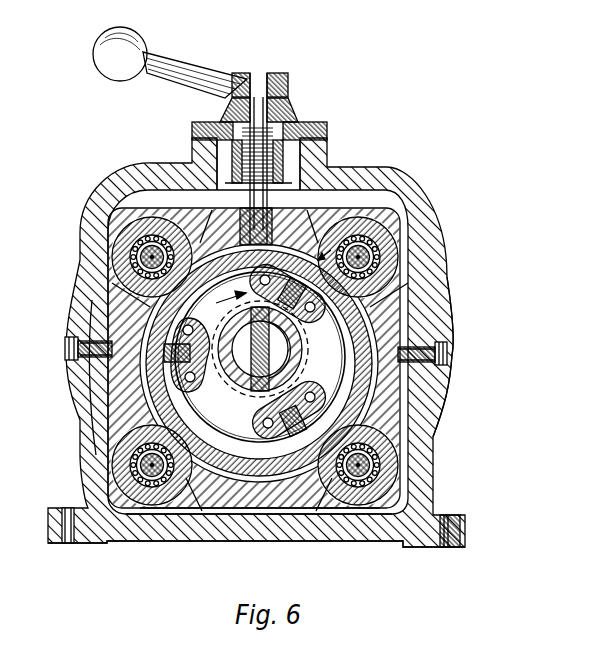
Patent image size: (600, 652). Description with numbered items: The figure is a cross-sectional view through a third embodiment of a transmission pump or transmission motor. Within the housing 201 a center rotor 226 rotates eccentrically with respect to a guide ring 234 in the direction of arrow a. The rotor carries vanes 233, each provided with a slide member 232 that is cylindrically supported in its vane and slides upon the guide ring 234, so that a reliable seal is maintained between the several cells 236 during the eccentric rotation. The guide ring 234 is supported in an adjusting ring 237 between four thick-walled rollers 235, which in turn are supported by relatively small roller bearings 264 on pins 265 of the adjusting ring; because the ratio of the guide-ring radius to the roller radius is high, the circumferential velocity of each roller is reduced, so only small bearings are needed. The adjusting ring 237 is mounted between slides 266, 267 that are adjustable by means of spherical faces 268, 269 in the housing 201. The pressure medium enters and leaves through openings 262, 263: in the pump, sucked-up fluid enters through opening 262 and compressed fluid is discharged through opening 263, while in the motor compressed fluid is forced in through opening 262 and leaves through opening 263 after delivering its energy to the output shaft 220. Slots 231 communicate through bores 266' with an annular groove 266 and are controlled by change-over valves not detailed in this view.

The housing 201 is at (146, 530).
The shaft 220 is at (284, 366).
The center rotor 226 is at (262, 412).
The slots 231 is at (286, 431).
The slide members 232 is at (303, 523).
The vanes 233 is at (287, 468).
The guide ring 234 is at (234, 443).
The thick-walled rollers 235 is at (374, 250).
The cells 236 is at (227, 440).
The adjusting ring 237 is at (313, 220).
The opening 262 is at (287, 338).
The opening 263 is at (215, 378).
The roller bearings 264 is at (380, 256).
The pins 265 is at (384, 221).
The annular groove 266 is at (296, 360).
The bores 266' is at (68, 377).
The slide 267 is at (103, 313).
The spherical face 268 is at (420, 380).
The spherical face 269 is at (92, 388).